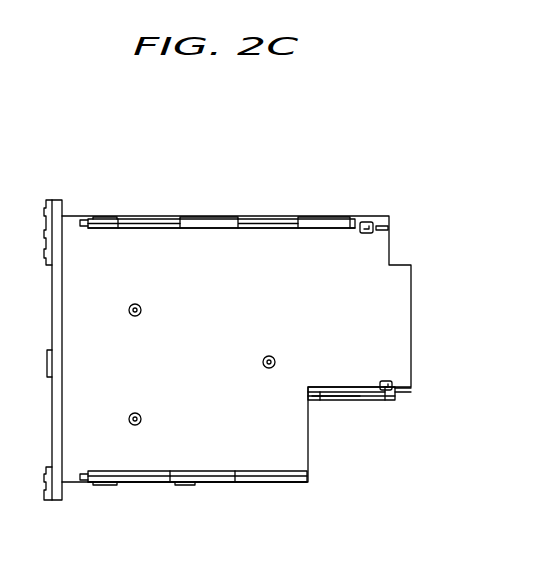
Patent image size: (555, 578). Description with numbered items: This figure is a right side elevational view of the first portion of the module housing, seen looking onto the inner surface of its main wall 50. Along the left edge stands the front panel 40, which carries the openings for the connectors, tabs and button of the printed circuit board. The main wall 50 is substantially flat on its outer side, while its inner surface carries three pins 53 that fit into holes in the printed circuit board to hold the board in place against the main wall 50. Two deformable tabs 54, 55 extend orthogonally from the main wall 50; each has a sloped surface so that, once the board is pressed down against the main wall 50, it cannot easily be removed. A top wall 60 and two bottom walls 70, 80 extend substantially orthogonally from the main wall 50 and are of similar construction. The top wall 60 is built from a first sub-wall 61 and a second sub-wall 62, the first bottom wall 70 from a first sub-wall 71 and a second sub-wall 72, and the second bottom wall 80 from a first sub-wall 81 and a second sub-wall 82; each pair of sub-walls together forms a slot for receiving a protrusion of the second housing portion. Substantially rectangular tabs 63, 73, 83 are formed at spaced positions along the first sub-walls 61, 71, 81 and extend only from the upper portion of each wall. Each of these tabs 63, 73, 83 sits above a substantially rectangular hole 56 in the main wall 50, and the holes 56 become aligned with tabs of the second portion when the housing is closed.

The front panel 40 is at (58, 200).
The main wall 50 is at (388, 313).
The pins 53 is at (141, 413).
The tab 54 is at (367, 221).
The tab 55 is at (387, 392).
The holes 56 is at (201, 229).
The top wall 60 is at (205, 218).
The first sub-wall 61 is at (152, 218).
The second sub-wall 62 is at (129, 229).
The tabs 63 is at (103, 218).
The bottom wall 70 is at (190, 483).
The first sub-wall 71 is at (222, 483).
The second sub-wall 72 is at (229, 470).
The tabs 73 is at (190, 483).
The bottom wall 80 is at (353, 401).
The first sub-wall 81 is at (370, 401).
The second sub-wall 82 is at (346, 387).
The tabs 83 is at (327, 401).